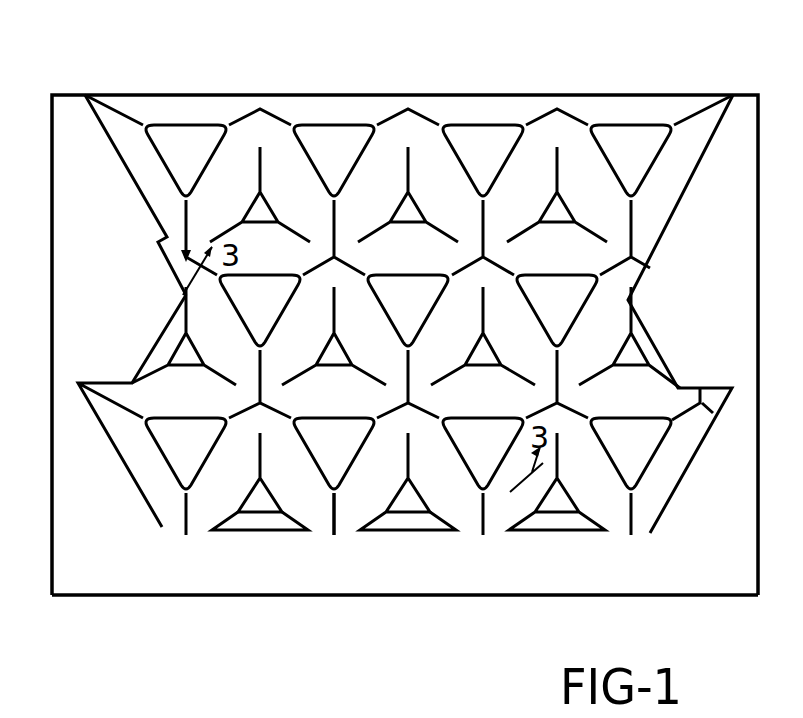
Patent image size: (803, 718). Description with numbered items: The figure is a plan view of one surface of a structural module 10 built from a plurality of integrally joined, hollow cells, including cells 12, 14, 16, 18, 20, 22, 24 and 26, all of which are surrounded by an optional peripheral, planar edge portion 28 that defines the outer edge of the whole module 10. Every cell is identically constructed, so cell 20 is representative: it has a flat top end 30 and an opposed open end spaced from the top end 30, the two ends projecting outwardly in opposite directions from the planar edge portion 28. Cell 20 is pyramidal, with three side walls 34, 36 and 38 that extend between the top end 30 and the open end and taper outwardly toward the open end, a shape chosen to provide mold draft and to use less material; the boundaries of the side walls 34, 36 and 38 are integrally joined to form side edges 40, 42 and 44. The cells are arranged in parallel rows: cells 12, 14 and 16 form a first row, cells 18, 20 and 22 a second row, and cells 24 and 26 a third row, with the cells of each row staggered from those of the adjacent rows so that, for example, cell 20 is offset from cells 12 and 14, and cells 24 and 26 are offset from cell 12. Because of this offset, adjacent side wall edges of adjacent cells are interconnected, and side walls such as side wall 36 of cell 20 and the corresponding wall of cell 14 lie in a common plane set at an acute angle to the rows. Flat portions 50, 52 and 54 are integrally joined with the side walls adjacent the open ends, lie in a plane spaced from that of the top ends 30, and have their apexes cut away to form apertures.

The structural module 10 is at (446, 24).
The cell 12 is at (240, 288).
The cell 14 is at (358, 240).
The cell 16 is at (578, 292).
The cell 18 is at (150, 433).
The cell 20 is at (320, 450).
The cell 22 is at (482, 483).
The cell 24 is at (180, 157).
The cell 26 is at (322, 152).
The peripheral planar edge portion 28 is at (648, 587).
The top end 30 is at (322, 483).
The side wall 34 is at (253, 498).
The side wall 36 is at (367, 485).
The side wall 38 is at (333, 394).
The side edge 40 is at (340, 527).
The side edge 42 is at (387, 414).
The side edge 44 is at (258, 403).
The flat portion 50 is at (298, 460).
The flat portion 52 is at (422, 506).
The flat portion 54 is at (389, 296).